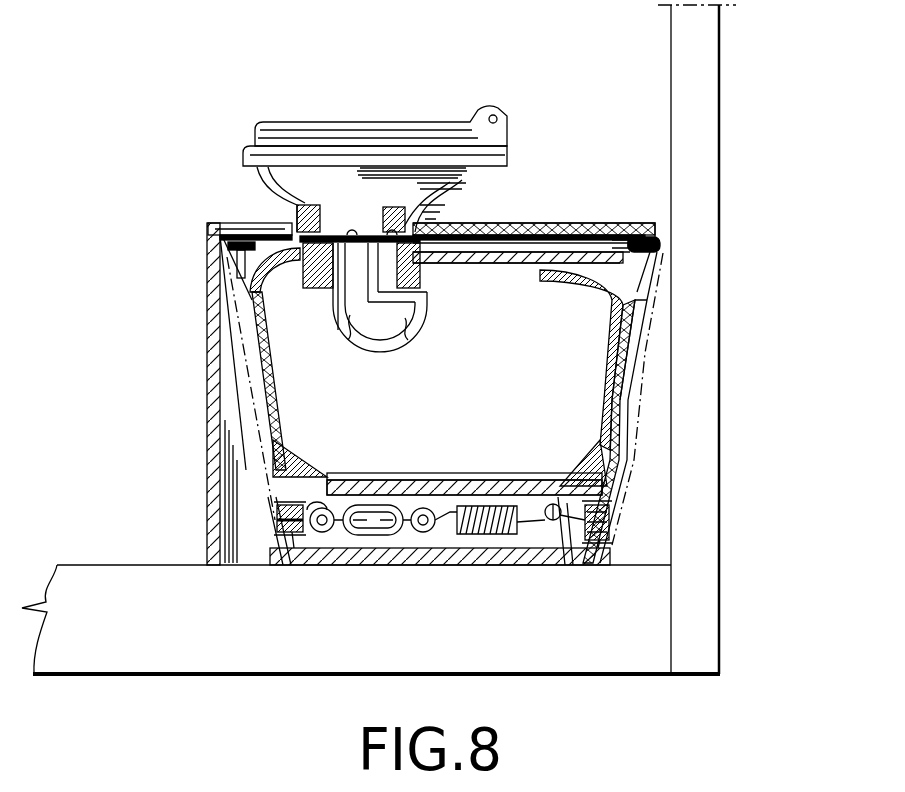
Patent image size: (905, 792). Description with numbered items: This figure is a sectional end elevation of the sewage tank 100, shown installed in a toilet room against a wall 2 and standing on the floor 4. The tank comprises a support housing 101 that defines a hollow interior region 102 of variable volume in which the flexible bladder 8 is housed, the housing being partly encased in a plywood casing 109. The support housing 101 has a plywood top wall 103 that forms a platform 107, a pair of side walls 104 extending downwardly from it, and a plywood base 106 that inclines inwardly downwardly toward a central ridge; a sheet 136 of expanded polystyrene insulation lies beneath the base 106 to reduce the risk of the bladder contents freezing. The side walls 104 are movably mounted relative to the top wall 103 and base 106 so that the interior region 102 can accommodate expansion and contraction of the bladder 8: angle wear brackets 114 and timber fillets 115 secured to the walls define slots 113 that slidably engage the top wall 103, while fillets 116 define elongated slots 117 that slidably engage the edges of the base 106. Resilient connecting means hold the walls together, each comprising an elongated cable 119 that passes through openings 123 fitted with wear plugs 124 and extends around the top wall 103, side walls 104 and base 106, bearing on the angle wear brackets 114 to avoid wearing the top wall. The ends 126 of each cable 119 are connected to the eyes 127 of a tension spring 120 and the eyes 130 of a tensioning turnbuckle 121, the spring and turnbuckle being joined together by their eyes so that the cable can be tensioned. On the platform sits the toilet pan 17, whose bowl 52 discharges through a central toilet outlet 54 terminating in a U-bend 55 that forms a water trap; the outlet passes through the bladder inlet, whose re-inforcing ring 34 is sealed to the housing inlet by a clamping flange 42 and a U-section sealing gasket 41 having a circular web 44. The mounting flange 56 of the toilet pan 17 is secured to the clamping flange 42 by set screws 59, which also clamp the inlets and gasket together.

The wall 2 is at (700, 110).
The floor 4 is at (84, 582).
The bladder 8 is at (662, 360).
The toilet pan 17 is at (334, 152).
The re-inforcing ring 34 is at (300, 288).
The sealing gasket 41 is at (465, 188).
The clamping flange 42 is at (423, 272).
The circular web 44 is at (292, 234).
The bowl 52 is at (396, 185).
The toilet outlet 54 is at (356, 320).
The U-bend 55 is at (407, 322).
The mounting flange 56 is at (438, 210).
The set screws 59 is at (285, 236).
The sewage tank 100 is at (230, 78).
The support housing 101 is at (635, 447).
The hollow interior region 102 is at (650, 290).
The top wall 103 is at (628, 238).
The side walls 104 is at (258, 348).
The base 106 is at (470, 475).
The platform 107 is at (518, 247).
The casing 109 is at (212, 408).
The slots 113 is at (212, 236).
The angle wear brackets 114 is at (232, 264).
The timber fillets 115 is at (236, 294).
The fillets 116 is at (230, 492).
The elongated slots 117 is at (300, 465).
The cable 119 is at (235, 225).
The tension spring 120 is at (500, 545).
The tensioning turnbuckle 121 is at (385, 505).
The openings 123 is at (273, 522).
The wear plugs 124 is at (282, 545).
The ends 126 is at (315, 542).
The eyes 127 is at (443, 545).
The eyes 130 is at (337, 545).
The sheet 136 is at (470, 545).